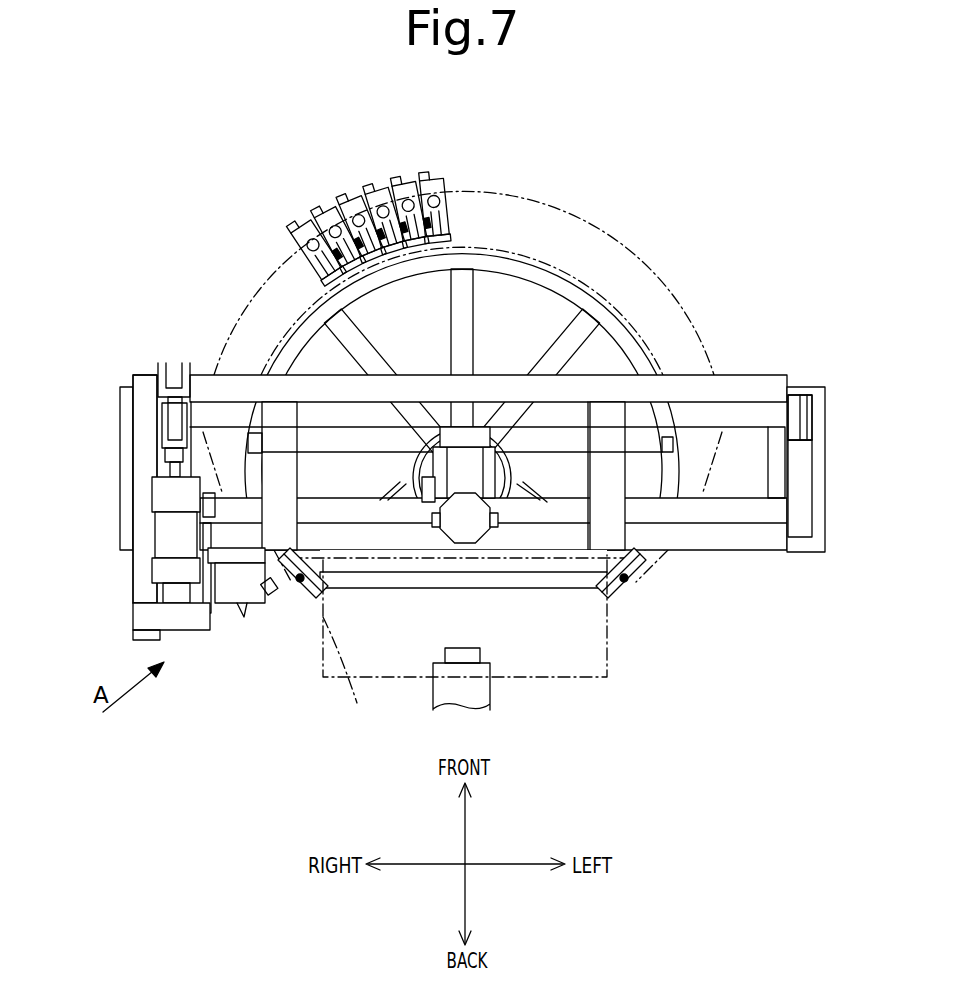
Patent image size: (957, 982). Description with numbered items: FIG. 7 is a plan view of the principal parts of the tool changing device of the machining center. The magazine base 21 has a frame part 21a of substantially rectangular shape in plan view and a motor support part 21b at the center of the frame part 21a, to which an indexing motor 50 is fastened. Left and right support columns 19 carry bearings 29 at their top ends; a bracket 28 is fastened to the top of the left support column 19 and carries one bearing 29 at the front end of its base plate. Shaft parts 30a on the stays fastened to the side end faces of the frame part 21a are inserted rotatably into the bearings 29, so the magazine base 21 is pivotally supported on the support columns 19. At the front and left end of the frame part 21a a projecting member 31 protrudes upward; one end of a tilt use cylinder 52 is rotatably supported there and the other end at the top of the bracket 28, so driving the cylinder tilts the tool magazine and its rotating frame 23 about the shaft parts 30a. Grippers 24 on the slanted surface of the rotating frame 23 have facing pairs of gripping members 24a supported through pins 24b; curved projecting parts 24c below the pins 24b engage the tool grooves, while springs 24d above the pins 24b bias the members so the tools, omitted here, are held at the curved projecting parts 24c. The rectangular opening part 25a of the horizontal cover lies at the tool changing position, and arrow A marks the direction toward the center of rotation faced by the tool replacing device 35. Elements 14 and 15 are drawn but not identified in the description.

The vehicle body frame 14 is at (490, 698).
The mount bracket 15 is at (463, 648).
The support column 19 is at (120, 492).
The magazine base 21 is at (507, 467).
The frame part 21a is at (757, 376).
The motor support part 21b is at (513, 488).
The rotating frame 23 is at (300, 330).
The grippers 24 is at (390, 172).
The gripping members 24a is at (350, 212).
The pins 24b is at (325, 232).
The curved projecting parts 24c is at (367, 215).
The springs 24d is at (447, 222).
The opening part 25a is at (413, 558).
The bracket 28 is at (132, 576).
The bearing 29 is at (147, 413).
The shaft parts 30a is at (477, 467).
The projecting member 31 is at (158, 372).
The tool replacing device 35 is at (227, 628).
The indexing motor 50 is at (467, 458).
The tilt use cylinder 52 is at (153, 532).